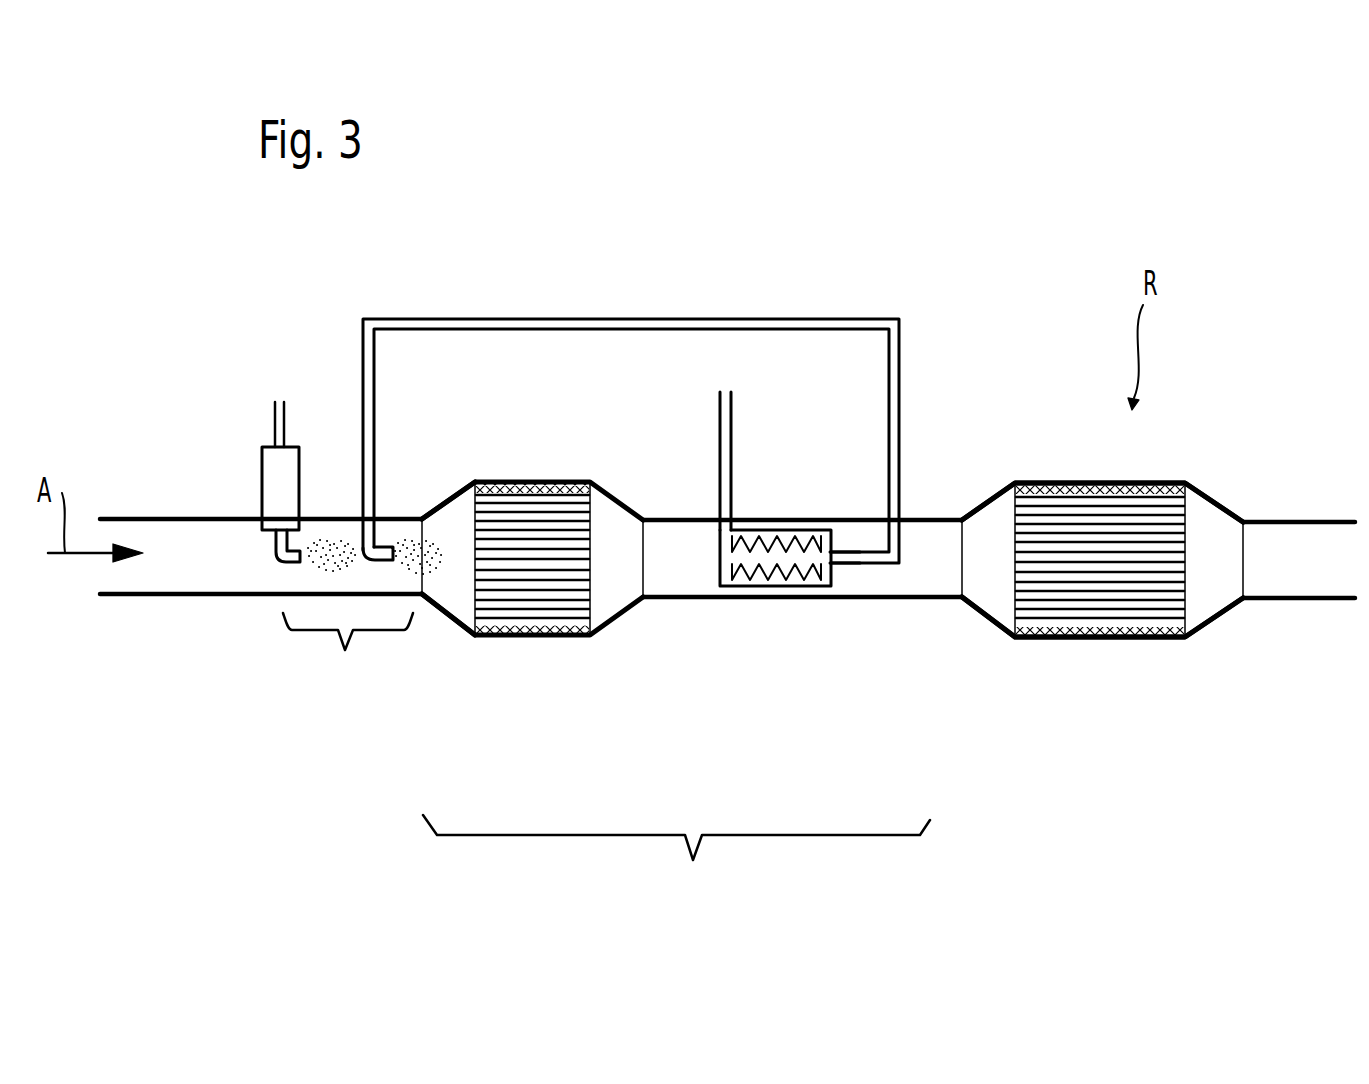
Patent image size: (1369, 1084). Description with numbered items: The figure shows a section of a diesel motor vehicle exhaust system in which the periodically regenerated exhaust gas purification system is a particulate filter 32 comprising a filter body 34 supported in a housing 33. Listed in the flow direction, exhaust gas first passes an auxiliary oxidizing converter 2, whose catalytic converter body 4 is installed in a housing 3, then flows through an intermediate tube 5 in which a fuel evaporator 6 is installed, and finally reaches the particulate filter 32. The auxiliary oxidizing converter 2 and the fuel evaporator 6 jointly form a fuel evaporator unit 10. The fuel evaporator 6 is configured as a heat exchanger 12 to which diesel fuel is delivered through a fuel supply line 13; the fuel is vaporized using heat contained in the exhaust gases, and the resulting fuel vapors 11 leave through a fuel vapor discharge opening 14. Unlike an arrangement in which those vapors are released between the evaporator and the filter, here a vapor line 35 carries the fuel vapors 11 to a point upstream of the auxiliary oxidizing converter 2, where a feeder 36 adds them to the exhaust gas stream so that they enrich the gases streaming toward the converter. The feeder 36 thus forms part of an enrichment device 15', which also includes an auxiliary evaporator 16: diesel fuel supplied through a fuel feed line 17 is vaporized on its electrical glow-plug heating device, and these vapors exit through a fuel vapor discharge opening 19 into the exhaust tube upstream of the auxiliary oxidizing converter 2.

The auxiliary oxidizing converter 2 is at (572, 650).
The housing 3 is at (453, 620).
The catalytic converter body 4 is at (537, 585).
The intermediate tube 5 is at (917, 600).
The fuel evaporator 6 is at (704, 549).
The fuel evaporator unit 10 is at (676, 857).
The fuel vapors 11 is at (441, 548).
The heat exchanger 12 is at (783, 586).
The fuel supply line 13 is at (728, 427).
The fuel vapor discharge opening 14 is at (853, 567).
The enrichment device 15' is at (348, 654).
The auxiliary evaporator 16 is at (272, 482).
The fuel feed line 17 is at (275, 420).
The fuel vapor discharge opening 19 is at (282, 556).
The particulate filter 32 is at (1108, 650).
The housing 33 is at (1218, 617).
The filter body 34 is at (1135, 508).
The vapor line 35 is at (640, 319).
The feeder 36 is at (389, 513).